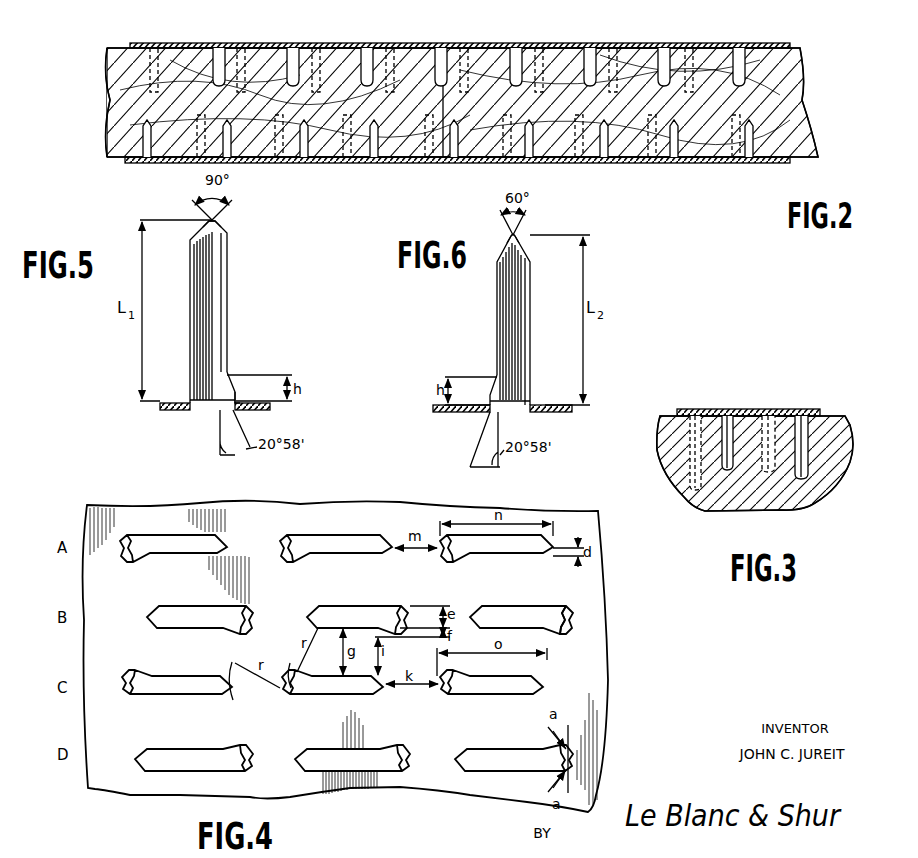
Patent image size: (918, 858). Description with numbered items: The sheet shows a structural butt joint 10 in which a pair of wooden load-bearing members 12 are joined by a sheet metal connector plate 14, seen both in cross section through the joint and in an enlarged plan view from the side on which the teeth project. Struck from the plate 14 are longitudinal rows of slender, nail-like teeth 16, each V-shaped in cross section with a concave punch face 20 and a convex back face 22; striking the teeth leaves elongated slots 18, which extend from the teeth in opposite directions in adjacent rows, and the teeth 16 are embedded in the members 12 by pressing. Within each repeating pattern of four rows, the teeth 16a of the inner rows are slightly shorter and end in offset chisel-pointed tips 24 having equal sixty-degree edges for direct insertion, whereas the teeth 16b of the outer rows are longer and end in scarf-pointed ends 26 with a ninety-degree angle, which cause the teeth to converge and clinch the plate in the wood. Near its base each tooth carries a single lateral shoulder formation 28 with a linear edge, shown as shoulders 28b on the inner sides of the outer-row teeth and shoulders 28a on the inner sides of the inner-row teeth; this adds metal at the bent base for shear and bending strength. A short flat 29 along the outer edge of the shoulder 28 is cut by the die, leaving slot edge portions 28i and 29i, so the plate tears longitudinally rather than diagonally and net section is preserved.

In FIG. 2, the structural butt joint 10 is at (643, 174).
In FIG. 2, the structural load-bearing members 12 is at (765, 164).
In FIG. 3, the structural load-bearing members 12 is at (805, 498).
In FIG. 2, the connector plate 14 is at (300, 46).
In FIG. 4, the connector plate 14 is at (512, 508).
In FIG. 2, the teeth 16 is at (470, 48).
In FIG. 6, the teeth of innermost rows 16a is at (497, 294).
In FIG. 4, the teeth of innermost rows 16a is at (578, 614).
In FIG. 5, the teeth of outermost rows 16b is at (190, 287).
In FIG. 4, the teeth of outermost rows 16b is at (284, 536).
In FIG. 2, the slots 18 is at (420, 46).
In FIG. 4, the punch face 20 is at (566, 629).
In FIG. 4, the back face 22 is at (575, 635).
In FIG. 6, the chisel-pointed tips 24 is at (519, 238).
In FIG. 3, the chisel-pointed tips 24 is at (730, 472).
In FIG. 5, the scarf-pointed ends 26 is at (216, 223).
In FIG. 3, the scarf-pointed ends 26 is at (695, 497).
In FIG. 3, the shoulder formation 28 is at (738, 420).
In FIG. 6, the shoulders of inner rows 28a is at (493, 385).
In FIG. 5, the shoulders of outer rows 28b is at (230, 376).
In FIG. 4, the slot edge portion 28i is at (223, 629).
In FIG. 5, the flat 29 is at (237, 396).
In FIG. 4, the slot edge portion 29i is at (393, 750).